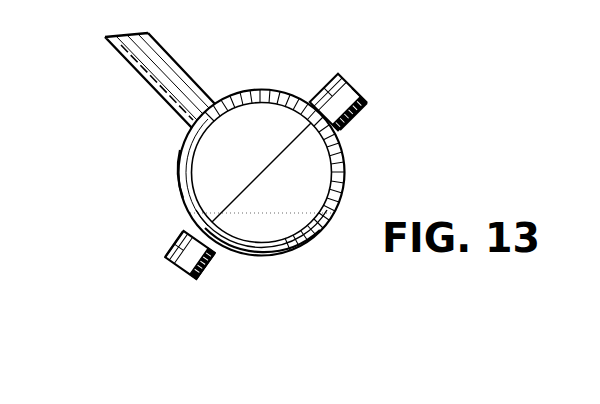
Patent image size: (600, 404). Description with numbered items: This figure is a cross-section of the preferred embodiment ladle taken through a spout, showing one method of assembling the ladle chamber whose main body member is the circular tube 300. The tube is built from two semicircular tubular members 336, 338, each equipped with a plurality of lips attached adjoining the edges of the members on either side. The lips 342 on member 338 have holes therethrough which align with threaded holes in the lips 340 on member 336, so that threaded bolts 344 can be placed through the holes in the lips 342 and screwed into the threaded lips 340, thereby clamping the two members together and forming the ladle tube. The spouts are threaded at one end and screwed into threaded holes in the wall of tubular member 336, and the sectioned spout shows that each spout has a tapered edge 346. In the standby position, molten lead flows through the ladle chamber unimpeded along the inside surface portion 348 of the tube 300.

The circular tube 300 is at (172, 150).
The semicircular tubular member 336 is at (178, 196).
The semicircular tubular member 338 is at (293, 247).
The lips 340 is at (312, 92).
The lips 342 is at (358, 96).
The clamp jaw 344 is at (358, 119).
The tapered edge 346 is at (132, 36).
The inside surface portion 348 is at (268, 240).